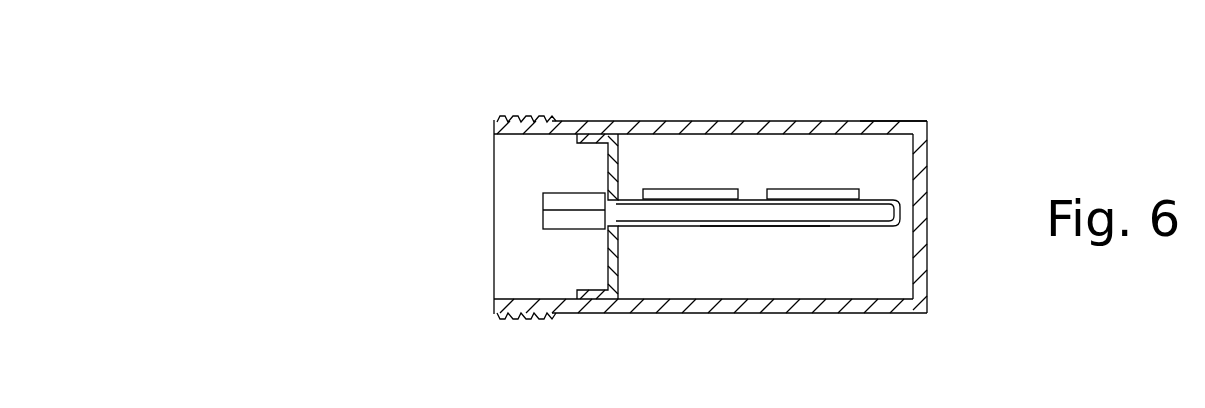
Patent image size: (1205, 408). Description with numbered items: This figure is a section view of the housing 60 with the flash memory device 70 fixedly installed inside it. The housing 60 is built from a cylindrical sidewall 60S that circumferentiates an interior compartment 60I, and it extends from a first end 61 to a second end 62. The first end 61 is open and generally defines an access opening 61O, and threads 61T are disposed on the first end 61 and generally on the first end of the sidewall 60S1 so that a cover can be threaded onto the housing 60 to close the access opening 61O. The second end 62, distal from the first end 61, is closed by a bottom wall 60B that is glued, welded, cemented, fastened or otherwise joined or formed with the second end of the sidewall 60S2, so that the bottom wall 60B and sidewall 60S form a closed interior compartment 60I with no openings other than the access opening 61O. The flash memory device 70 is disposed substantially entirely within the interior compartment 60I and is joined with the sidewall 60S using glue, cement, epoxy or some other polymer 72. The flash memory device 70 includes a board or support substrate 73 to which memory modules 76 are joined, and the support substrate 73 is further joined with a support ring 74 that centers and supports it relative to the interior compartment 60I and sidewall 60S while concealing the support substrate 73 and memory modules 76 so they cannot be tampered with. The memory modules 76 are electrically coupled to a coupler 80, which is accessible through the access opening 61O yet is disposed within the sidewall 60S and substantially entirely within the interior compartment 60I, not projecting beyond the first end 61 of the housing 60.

The housing 60 is at (488, 86).
The first end 61 is at (519, 118).
The first end of the sidewall 60S1 is at (533, 121).
The access opening 61O is at (512, 165).
The threads 61T is at (522, 316).
The sidewall 60S is at (790, 121).
The second end of the sidewall 60S2 is at (893, 121).
The second end 62 is at (927, 122).
The bottom wall 60B is at (928, 172).
The interior compartment 60I is at (856, 172).
The support ring 74 is at (592, 292).
The polymer 72 is at (890, 228).
The flash memory device 70 is at (838, 213).
The support substrate 73 is at (762, 228).
The memory modules 76 is at (780, 190).
The coupler 80 is at (566, 229).